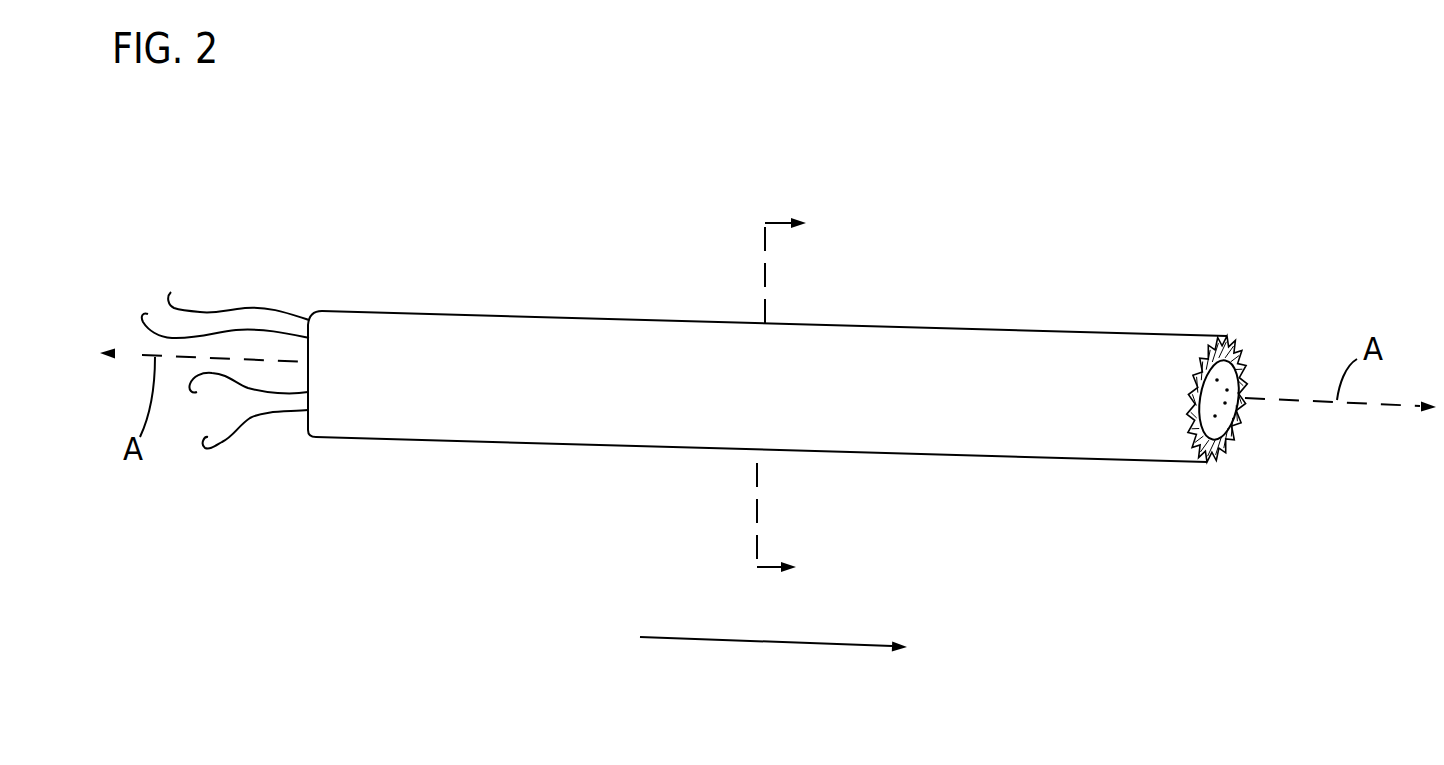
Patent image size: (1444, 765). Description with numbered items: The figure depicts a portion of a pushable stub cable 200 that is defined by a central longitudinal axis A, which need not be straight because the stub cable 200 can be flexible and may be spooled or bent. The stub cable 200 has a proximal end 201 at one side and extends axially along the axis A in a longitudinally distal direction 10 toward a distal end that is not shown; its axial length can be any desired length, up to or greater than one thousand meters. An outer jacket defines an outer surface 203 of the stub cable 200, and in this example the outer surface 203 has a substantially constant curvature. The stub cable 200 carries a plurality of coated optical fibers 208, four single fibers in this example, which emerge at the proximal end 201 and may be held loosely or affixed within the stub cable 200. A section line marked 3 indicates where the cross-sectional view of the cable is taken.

The pushable stub cable 200 is at (487, 230).
The proximal end 201 is at (309, 318).
The outer surface 203 is at (967, 328).
The coated optical fibers 208 is at (158, 327).
The longitudinally distal direction 10 is at (773, 642).
The section line 3- 3 is at (795, 395).